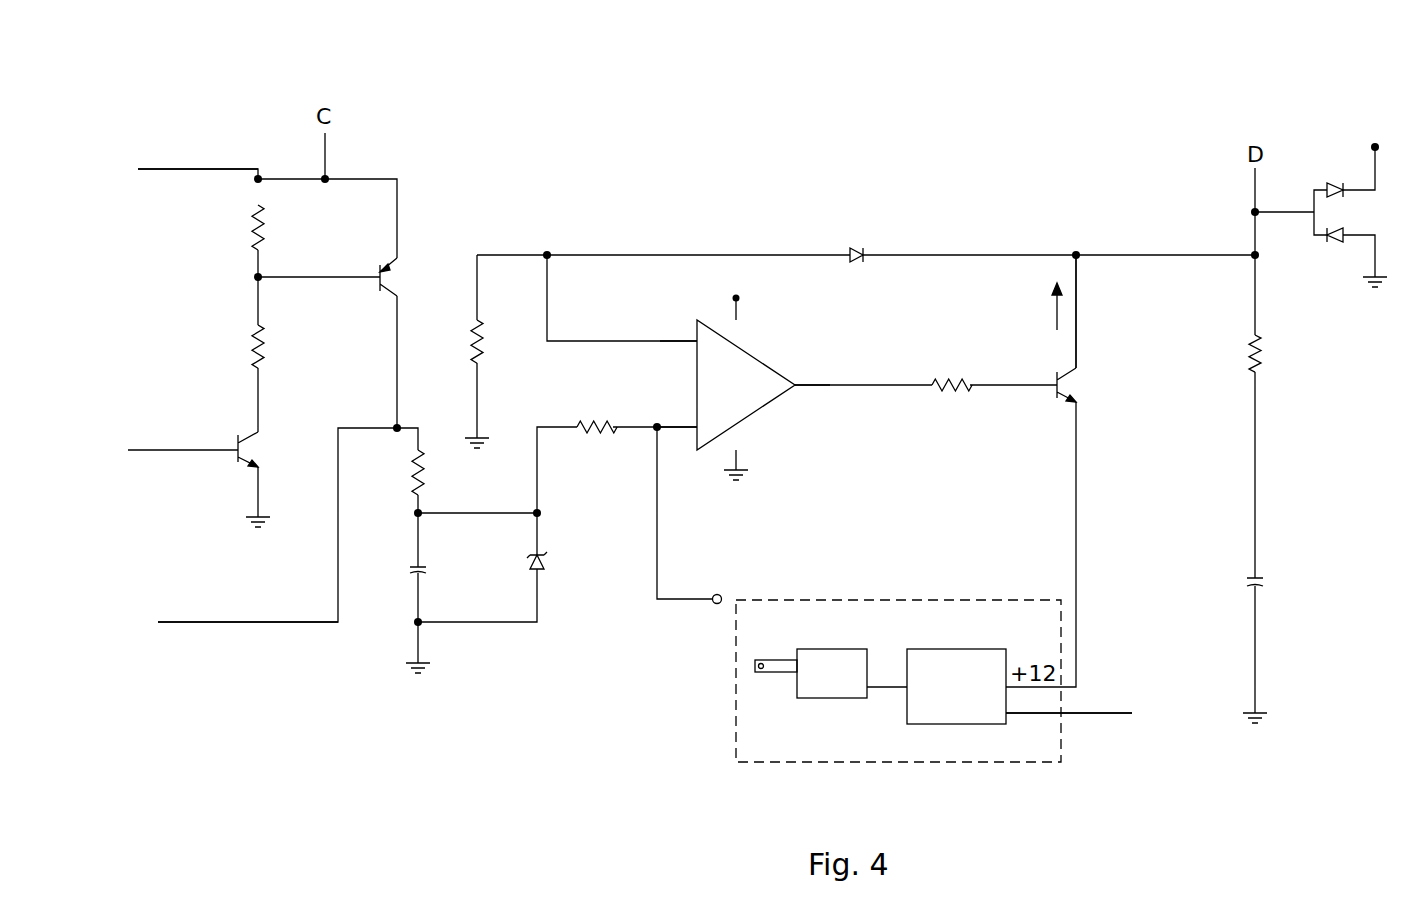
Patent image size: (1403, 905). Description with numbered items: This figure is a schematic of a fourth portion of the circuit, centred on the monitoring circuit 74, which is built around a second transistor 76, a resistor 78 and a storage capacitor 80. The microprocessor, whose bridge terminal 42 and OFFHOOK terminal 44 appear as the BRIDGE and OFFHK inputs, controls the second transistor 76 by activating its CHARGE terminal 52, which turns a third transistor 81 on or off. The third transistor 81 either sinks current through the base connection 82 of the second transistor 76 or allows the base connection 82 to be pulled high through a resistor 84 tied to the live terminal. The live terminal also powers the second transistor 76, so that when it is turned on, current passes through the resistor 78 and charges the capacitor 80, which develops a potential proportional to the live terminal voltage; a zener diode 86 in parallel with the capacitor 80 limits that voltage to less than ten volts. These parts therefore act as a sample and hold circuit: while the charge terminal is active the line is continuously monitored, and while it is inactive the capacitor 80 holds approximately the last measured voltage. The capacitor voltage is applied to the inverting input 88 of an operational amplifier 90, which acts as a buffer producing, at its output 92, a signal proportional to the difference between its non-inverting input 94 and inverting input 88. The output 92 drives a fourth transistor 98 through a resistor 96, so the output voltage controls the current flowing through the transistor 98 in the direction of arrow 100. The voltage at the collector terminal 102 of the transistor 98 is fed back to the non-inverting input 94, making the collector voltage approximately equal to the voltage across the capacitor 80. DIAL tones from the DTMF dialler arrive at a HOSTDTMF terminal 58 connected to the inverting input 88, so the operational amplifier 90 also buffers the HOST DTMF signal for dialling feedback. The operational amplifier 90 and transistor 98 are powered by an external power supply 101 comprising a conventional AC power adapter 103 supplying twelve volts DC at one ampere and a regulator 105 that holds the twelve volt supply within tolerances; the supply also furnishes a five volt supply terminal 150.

The bridge terminal 42 is at (140, 170).
The OFFHOOK terminal 44 is at (160, 624).
The CHARGE terminal 52 is at (148, 452).
The HOSTDTMF terminal 58 is at (718, 595).
The monitoring circuit 74 is at (728, 130).
The second transistor 76 is at (398, 277).
The resistor 78 is at (420, 475).
The storage capacitor 80 is at (410, 568).
The third transistor 81 is at (252, 455).
The base connection 82 is at (320, 279).
The resistor 84 is at (257, 230).
The zener diode 86 is at (545, 562).
The inverting input 88 is at (672, 430).
The operational amplifier 90 is at (745, 377).
The output 92 is at (797, 390).
The non-inverting input 94 is at (660, 338).
The resistor 96 is at (950, 390).
The fourth transistor 98 is at (1075, 395).
The arrow 100 is at (1053, 298).
The external power supply 101 is at (735, 627).
The collector terminal 102 is at (1078, 300).
The AC power adapter 103 is at (817, 698).
The regulator 105 is at (977, 724).
The five volt supply terminal 150 is at (1107, 713).